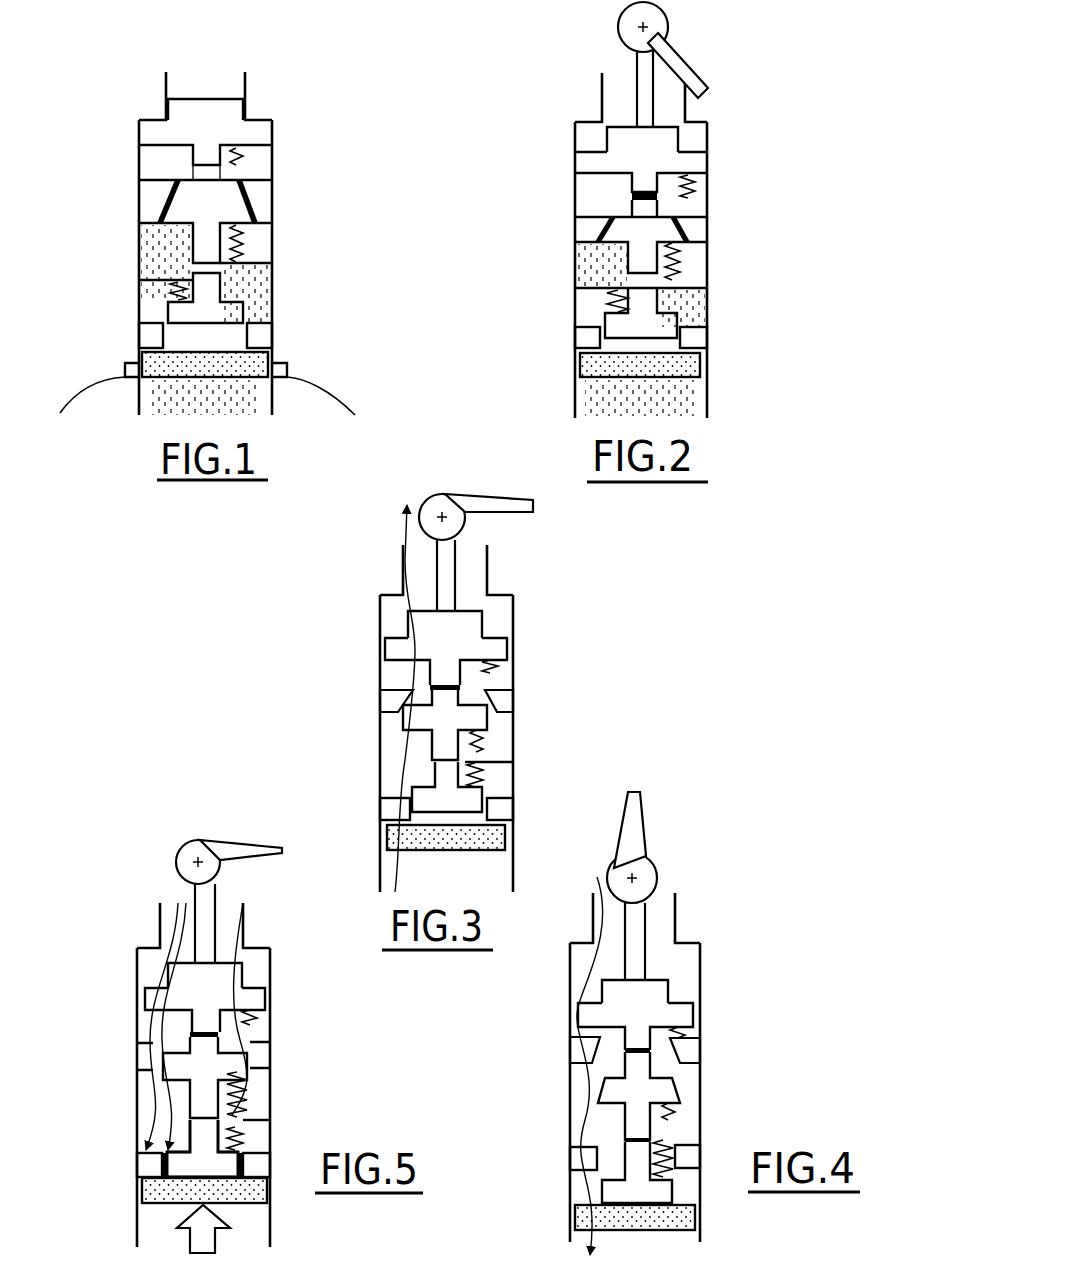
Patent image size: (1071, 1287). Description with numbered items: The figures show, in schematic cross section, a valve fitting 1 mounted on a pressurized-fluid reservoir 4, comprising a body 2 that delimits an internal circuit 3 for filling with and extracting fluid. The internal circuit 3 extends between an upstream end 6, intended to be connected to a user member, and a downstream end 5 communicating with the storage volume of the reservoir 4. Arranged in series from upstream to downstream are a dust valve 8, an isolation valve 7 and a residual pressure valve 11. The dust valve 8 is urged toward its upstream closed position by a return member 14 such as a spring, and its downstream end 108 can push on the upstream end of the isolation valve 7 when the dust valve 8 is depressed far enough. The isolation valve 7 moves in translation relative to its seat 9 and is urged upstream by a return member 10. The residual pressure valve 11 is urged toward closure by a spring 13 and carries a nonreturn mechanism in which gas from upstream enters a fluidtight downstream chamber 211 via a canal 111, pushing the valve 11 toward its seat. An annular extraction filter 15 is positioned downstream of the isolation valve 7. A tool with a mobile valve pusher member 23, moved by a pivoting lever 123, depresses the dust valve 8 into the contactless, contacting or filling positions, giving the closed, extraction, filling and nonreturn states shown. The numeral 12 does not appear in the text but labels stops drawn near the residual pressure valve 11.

In FIG. 1, the valve fitting 1 is at (288, 178).
In FIG. 2, the valve fitting 1 is at (714, 192).
In FIG. 3, the valve fitting 1 is at (542, 626).
In FIG. 5, the valve fitting 1 is at (283, 1026).
In FIG. 4, the valve fitting 1 is at (719, 955).
In FIG. 1, the body 2 is at (136, 172).
In FIG. 2, the body 2 is at (572, 194).
In FIG. 3, the body 2 is at (516, 604).
In FIG. 5, the body 2 is at (134, 984).
In FIG. 4, the body 2 is at (683, 925).
In FIG. 1, the internal circuit 3 is at (170, 160).
In FIG. 2, the internal circuit 3 is at (598, 256).
In FIG. 3, the internal circuit 3 is at (392, 747).
In FIG. 5, the internal circuit 3 is at (148, 948).
In FIG. 4, the internal circuit 3 is at (582, 963).
In FIG. 1, the pressurized-fluid reservoir 4 is at (322, 413).
In FIG. 1, the downstream end 5 is at (168, 386).
In FIG. 2, the downstream end 5 is at (598, 380).
In FIG. 3, the downstream end 5 is at (416, 858).
In FIG. 5, the downstream end 5 is at (258, 1226).
In FIG. 4, the downstream end 5 is at (683, 1240).
In FIG. 1, the upstream end 6 is at (196, 88).
In FIG. 2, the upstream end 6 is at (620, 110).
In FIG. 3, the upstream end 6 is at (479, 573).
In FIG. 5, the upstream end 6 is at (236, 900).
In FIG. 4, the upstream end 6 is at (662, 903).
In FIG. 1, the isolation valve 7 is at (182, 225).
In FIG. 2, the isolation valve 7 is at (618, 226).
In FIG. 3, the isolation valve 7 is at (485, 722).
In FIG. 5, the isolation valve 7 is at (250, 1080).
In FIG. 4, the isolation valve 7 is at (668, 1092).
In FIG. 1, the dust valve 8 is at (240, 130).
In FIG. 2, the dust valve 8 is at (690, 145).
In FIG. 3, the dust valve 8 is at (400, 650).
In FIG. 5, the dust valve 8 is at (236, 975).
In FIG. 4, the dust valve 8 is at (668, 1010).
In FIG. 1, the seat 9 is at (178, 207).
In FIG. 2, the seat 9 is at (697, 233).
In FIG. 3, the seat 9 is at (400, 702).
In FIG. 5, the seat 9 is at (255, 1053).
In FIG. 4, the seat 9 is at (583, 1050).
In FIG. 1, the return member 10 is at (252, 243).
In FIG. 2, the return member 10 is at (690, 272).
In FIG. 3, the return member 10 is at (485, 745).
In FIG. 5, the return member 10 is at (248, 1112).
In FIG. 4, the return member 10 is at (684, 1108).
In FIG. 1, the residual pressure valve 11 is at (242, 316).
In FIG. 2, the residual pressure valve 11 is at (690, 322).
In FIG. 3, the residual pressure valve 11 is at (470, 808).
In FIG. 5, the residual pressure valve 11 is at (158, 1178).
In FIG. 4, the residual pressure valve 11 is at (665, 1193).
In FIG. 1, the stop 12 is at (263, 337).
In FIG. 2, the stop 12 is at (583, 340).
In FIG. 3, the stop 12 is at (395, 812).
In FIG. 5, the stop 12 is at (150, 1165).
In FIG. 4, the stop 12 is at (582, 1157).
In FIG. 1, the spring 13 is at (186, 288).
In FIG. 2, the spring 13 is at (612, 298).
In FIG. 3, the spring 13 is at (483, 778).
In FIG. 5, the spring 13 is at (245, 1137).
In FIG. 4, the spring 13 is at (680, 1154).
In FIG. 1, the return member 14 is at (264, 166).
In FIG. 2, the return member 14 is at (698, 183).
In FIG. 3, the return member 14 is at (497, 668).
In FIG. 5, the return member 14 is at (259, 1012).
In FIG. 4, the return member 14 is at (690, 1034).
In FIG. 1, the annular extraction filter 15 is at (252, 372).
In FIG. 2, the annular extraction filter 15 is at (690, 367).
In FIG. 3, the annular extraction filter 15 is at (400, 838).
In FIG. 5, the annular extraction filter 15 is at (255, 1192).
In FIG. 4, the annular extraction filter 15 is at (580, 1220).
In FIG. 2, the valve pusher member 23 is at (636, 80).
In FIG. 3, the valve pusher member 23 is at (437, 562).
In FIG. 5, the valve pusher member 23 is at (200, 905).
In FIG. 4, the valve pusher member 23 is at (635, 955).
In FIG. 1, the downstream end of the dust valve 108 is at (224, 174).
In FIG. 2, the downstream end of the dust valve 108 is at (662, 196).
In FIG. 3, the downstream end of the dust valve 108 is at (465, 688).
In FIG. 5, the downstream end of the dust valve 108 is at (188, 1036).
In FIG. 4, the downstream end of the dust valve 108 is at (664, 1050).
In FIG. 5, the canal 111 is at (202, 1148).
In FIG. 2, the pivoting lever 123 is at (655, 32).
In FIG. 3, the pivoting lever 123 is at (440, 505).
In FIG. 5, the pivoting lever 123 is at (207, 850).
In FIG. 4, the pivoting lever 123 is at (632, 832).
In FIG. 5, the fluidtight downstream chamber 211 is at (202, 1148).